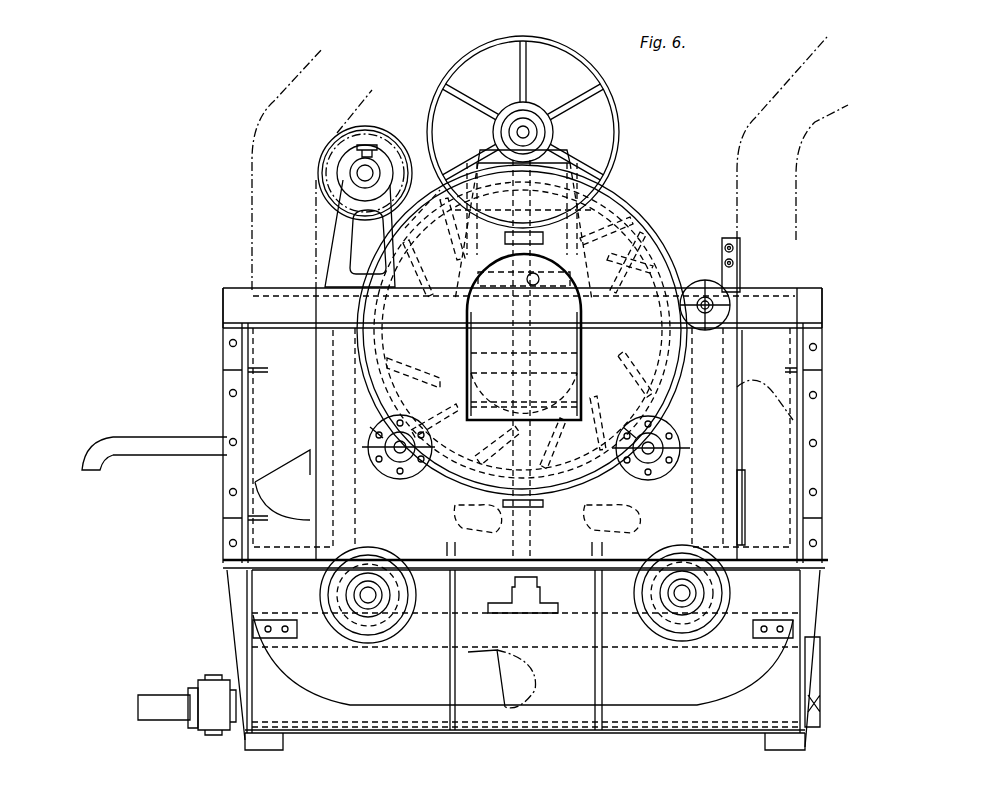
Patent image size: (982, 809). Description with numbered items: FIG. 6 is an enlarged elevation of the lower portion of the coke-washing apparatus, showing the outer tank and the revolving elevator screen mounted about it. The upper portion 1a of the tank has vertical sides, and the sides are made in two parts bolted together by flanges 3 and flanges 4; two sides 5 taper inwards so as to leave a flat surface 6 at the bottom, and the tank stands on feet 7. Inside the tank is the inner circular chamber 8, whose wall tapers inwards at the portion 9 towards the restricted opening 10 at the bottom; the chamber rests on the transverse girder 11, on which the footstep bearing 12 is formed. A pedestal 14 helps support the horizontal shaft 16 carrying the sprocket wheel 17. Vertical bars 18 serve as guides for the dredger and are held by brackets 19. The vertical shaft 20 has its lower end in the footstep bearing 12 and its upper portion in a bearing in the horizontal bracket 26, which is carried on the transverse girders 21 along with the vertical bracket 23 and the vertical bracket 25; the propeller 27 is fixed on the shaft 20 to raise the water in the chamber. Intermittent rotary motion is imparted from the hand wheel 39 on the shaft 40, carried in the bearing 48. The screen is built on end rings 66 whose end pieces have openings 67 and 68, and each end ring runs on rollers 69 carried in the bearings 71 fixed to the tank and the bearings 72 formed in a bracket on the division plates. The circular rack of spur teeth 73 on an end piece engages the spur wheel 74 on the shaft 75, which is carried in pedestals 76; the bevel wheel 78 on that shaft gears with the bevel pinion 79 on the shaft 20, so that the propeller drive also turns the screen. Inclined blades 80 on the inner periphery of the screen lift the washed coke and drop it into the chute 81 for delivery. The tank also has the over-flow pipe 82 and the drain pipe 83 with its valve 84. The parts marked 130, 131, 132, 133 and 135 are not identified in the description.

The upper portion of the tank 1a is at (521, 437).
The flange 3 is at (222, 355).
The flange 4 is at (826, 563).
The tapering side 5 is at (523, 658).
The flat surface 6 is at (515, 732).
The foot 7 is at (283, 742).
The inner circular chamber 8 is at (375, 500).
The tapering wall portion 9 is at (456, 590).
The restricted opening 10 is at (568, 615).
The transverse girder 11 is at (523, 628).
The footstep bearing 12 is at (523, 595).
The pedestal 14 is at (348, 610).
The horizontal shaft 16 is at (360, 593).
The sprocket wheel 17 is at (400, 627).
The vertical bar 18 is at (742, 248).
The bracket 19 is at (723, 525).
The vertical shaft 20 is at (533, 303).
The transverse girder 21 is at (522, 308).
The vertical bracket 23 is at (465, 258).
The vertical bracket 25 is at (327, 245).
The horizontal bracket 26 is at (524, 275).
The propeller 27 is at (547, 519).
The hand wheel 39 is at (741, 283).
The shaft 40 is at (682, 306).
The bearing 48 is at (732, 305).
The end ring 66 is at (688, 262).
The opening 67 is at (471, 305).
The opening 68 is at (431, 355).
The roller 69 is at (430, 465).
The bearing 71 is at (400, 455).
The bearing 72 is at (400, 423).
The circular rack of spur teeth 73 is at (660, 228).
The spur wheel 74 is at (540, 106).
The shaft 75 is at (528, 133).
The pedestal 76 is at (492, 136).
The bevel wheel 78 is at (605, 79).
The bevel pinion 79 is at (523, 225).
The inclined blade 80 is at (520, 329).
The chute 81 is at (549, 345).
The over-flow pipe 82 is at (154, 453).
The drain pipe 83 is at (160, 700).
The valve 84 is at (205, 678).
The curved guide 130 is at (537, 544).
The bracket 131 is at (380, 578).
The belt 132 is at (739, 160).
The pulley 133 is at (393, 125).
The pulley shaft 135 is at (357, 173).